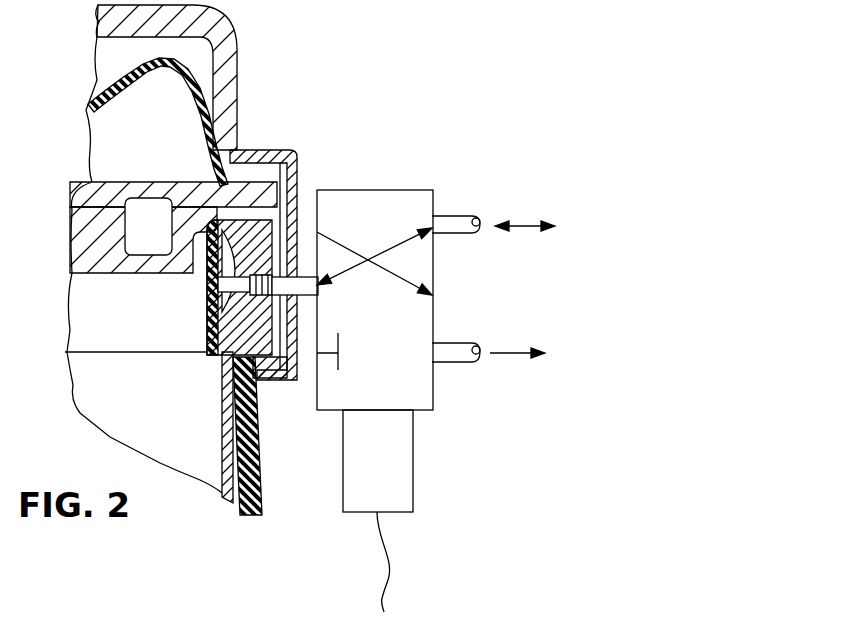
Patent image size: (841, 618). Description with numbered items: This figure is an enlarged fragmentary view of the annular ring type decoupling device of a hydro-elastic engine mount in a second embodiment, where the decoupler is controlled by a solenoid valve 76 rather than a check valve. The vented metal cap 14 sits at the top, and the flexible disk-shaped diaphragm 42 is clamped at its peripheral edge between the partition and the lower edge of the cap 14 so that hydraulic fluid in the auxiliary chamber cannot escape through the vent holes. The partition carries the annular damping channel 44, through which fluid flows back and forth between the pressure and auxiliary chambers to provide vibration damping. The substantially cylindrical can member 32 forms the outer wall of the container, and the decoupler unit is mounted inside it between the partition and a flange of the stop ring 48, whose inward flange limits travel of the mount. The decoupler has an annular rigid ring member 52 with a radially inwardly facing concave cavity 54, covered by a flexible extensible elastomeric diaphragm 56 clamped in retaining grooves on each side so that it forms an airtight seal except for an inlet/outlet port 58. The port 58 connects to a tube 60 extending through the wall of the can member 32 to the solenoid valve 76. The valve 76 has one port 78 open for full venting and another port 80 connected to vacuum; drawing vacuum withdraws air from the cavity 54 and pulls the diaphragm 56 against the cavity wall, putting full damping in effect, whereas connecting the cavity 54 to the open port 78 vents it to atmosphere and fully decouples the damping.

The vented metal cap 14 is at (238, 90).
The diaphragm 42 is at (118, 80).
The damping channel 44 is at (160, 192).
The stop ring 48 is at (222, 432).
The can member 32 is at (258, 437).
The rigid ring member 52 is at (298, 210).
The concave cavity 54 is at (208, 281).
The extensible elastomeric diaphragm 56 is at (207, 337).
The inlet/outlet port 58 is at (207, 320).
The tube 60 is at (303, 300).
The solenoid valve 76 is at (392, 190).
The open port 78 is at (463, 214).
The vacuum port 80 is at (456, 343).